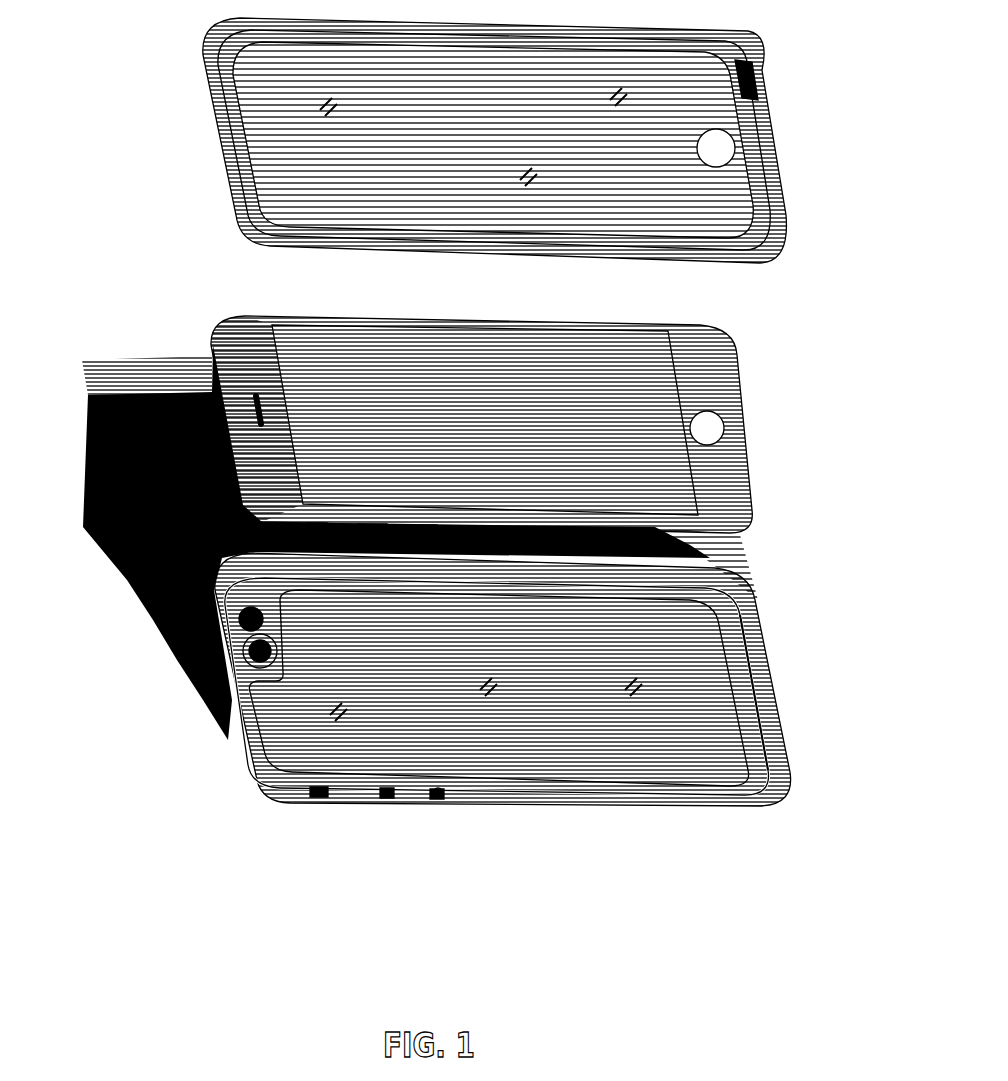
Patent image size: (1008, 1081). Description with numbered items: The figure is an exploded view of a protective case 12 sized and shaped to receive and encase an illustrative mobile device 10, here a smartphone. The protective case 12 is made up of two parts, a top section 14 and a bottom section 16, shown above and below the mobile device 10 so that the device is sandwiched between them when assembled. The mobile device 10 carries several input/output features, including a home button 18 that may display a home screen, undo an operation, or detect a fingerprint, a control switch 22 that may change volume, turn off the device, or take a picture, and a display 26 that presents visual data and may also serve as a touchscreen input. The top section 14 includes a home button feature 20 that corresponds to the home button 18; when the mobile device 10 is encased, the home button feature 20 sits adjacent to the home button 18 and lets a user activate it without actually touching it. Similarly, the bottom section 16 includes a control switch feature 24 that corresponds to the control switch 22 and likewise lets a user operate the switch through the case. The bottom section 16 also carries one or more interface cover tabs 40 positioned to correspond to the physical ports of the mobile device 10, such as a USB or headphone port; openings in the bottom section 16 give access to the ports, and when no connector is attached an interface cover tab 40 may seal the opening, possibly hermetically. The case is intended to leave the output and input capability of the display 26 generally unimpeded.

The mobile device 10 is at (467, 412).
The protective case 12 is at (163, 275).
The top section 14 is at (543, 140).
The bottom section 16 is at (556, 627).
The home button 18 is at (714, 426).
The home button feature 20 is at (733, 140).
The control switch 22 is at (533, 424).
The control switch feature 24 is at (438, 790).
The display 26 is at (485, 420).
The interface cover tab 40 is at (739, 727).